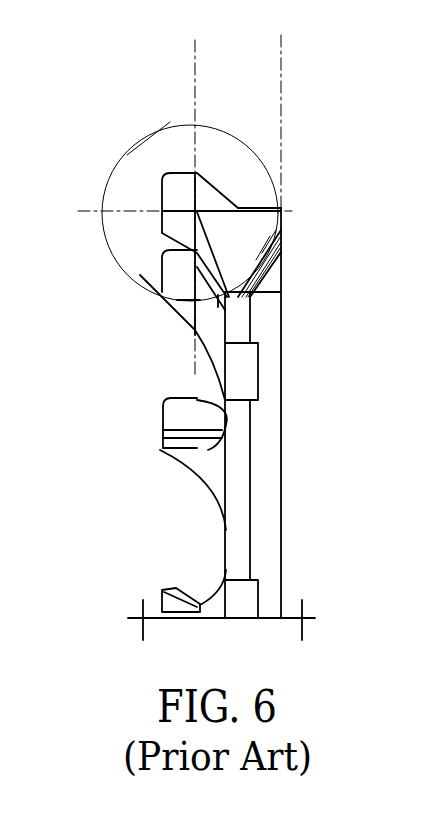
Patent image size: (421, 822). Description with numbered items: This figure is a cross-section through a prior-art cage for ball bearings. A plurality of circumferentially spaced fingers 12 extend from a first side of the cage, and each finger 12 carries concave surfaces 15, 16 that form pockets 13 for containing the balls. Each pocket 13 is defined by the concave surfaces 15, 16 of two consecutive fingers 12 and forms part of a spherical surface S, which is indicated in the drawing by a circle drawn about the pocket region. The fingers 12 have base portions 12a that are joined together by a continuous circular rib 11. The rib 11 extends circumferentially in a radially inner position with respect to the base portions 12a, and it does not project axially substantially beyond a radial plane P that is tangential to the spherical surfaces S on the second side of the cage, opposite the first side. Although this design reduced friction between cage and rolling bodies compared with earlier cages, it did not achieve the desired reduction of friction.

The continuous circular rib 11 is at (283, 283).
The fingers 12 is at (162, 180).
The base portions 12a is at (252, 224).
The pockets 13 is at (185, 370).
The concave surface 15 is at (163, 262).
The concave surface 16 is at (173, 479).
The spherical surface S is at (150, 120).
The radial plane P is at (283, 70).